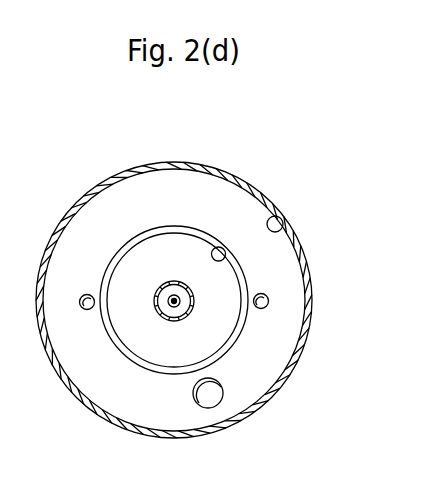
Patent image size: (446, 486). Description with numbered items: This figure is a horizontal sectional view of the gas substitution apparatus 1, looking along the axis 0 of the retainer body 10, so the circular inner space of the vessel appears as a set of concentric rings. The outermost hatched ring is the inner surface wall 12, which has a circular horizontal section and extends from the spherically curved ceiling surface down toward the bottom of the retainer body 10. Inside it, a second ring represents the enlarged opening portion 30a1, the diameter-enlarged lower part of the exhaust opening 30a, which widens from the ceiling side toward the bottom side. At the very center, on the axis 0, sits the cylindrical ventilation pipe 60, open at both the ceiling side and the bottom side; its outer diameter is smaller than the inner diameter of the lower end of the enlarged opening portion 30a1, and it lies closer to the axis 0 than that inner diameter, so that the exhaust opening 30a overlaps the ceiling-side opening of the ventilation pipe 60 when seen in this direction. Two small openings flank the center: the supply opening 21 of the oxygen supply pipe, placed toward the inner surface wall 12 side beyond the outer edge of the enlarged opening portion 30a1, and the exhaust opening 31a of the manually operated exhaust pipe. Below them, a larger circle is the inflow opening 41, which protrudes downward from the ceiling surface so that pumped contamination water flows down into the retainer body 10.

The gas substitution apparatus 1 is at (80, 77).
The retainer body 10 is at (68, 161).
The inner surface wall 12 is at (293, 230).
The enlarged opening portion 30a1 is at (228, 258).
The exhaust opening 30a is at (172, 299).
The axis O 0 is at (177, 303).
The ventilation pipe 60 is at (158, 313).
The supply opening 21 is at (86, 310).
The exhaust opening 31a is at (267, 306).
The inflow opening 41 is at (205, 408).